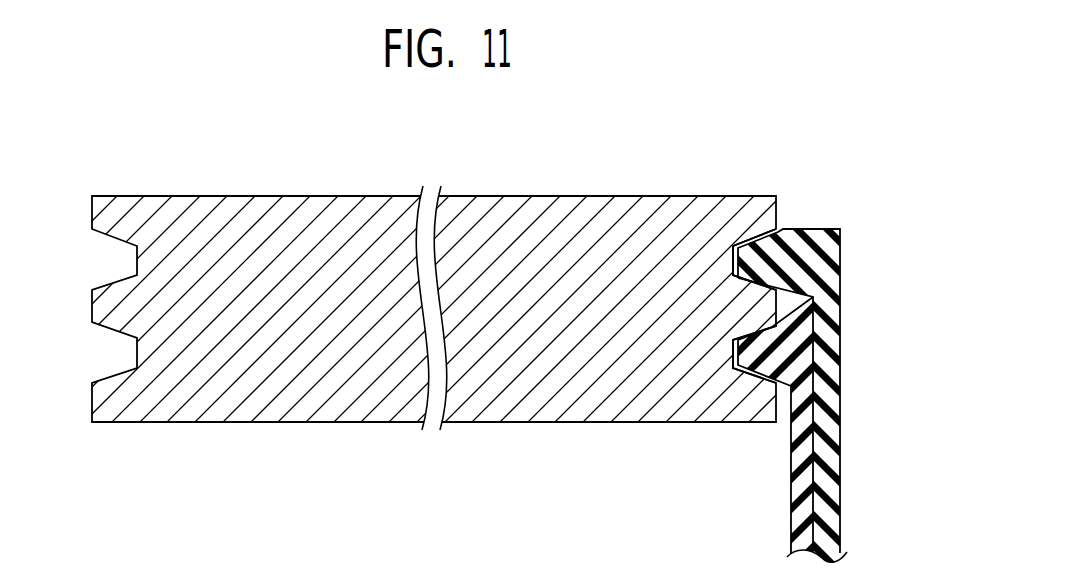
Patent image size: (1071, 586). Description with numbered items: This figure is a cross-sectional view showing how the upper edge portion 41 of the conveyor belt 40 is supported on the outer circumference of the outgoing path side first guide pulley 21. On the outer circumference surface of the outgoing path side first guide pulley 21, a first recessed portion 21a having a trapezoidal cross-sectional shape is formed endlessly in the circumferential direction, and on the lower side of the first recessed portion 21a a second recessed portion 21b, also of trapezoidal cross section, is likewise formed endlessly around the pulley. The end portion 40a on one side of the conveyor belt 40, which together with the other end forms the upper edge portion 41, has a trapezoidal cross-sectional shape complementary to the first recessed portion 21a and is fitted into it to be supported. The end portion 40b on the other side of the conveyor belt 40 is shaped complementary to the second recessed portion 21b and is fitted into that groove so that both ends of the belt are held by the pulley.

The outgoing path side first guide pulley 21 is at (509, 308).
The first recessed portion 21a is at (737, 248).
The second recessed portion 21b is at (735, 365).
The conveyor belt 40 is at (744, 329).
The end portion on one side of the conveyor belt 40a is at (772, 242).
The end portion on the other side of the conveyor belt 40b is at (787, 330).
The upper edge portion of the conveyor belt 41 is at (744, 328).